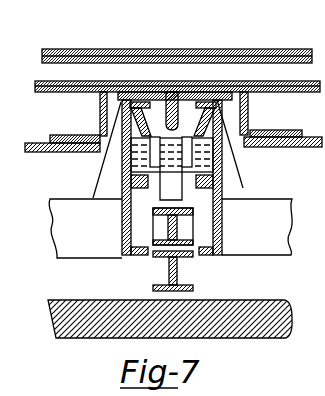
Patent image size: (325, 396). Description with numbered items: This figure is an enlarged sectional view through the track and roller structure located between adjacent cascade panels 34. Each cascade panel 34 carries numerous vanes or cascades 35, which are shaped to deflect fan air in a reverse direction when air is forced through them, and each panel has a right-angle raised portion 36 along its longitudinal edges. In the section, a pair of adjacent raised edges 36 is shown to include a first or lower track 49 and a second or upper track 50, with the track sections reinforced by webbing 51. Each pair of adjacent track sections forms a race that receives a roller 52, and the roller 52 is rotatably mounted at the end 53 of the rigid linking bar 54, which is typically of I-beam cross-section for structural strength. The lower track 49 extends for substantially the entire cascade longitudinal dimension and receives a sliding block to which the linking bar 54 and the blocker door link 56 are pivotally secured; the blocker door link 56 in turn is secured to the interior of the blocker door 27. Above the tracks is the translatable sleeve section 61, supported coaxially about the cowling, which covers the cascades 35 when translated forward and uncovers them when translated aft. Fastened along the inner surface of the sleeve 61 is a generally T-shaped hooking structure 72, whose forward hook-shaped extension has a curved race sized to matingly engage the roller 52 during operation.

The blocker door 27 is at (72, 318).
The cascade panel 34 is at (72, 198).
The vanes or cascades 35 is at (82, 239).
The right-angle raised portion 36 is at (121, 230).
The lower track 49 is at (139, 250).
The upper track 50 is at (138, 133).
The webbing 51 is at (113, 170).
The roller 52 is at (218, 110).
The end of the rigid linking bar 53 is at (203, 118).
The rigid linking bar 54 is at (221, 189).
The blocker door link 56 is at (180, 272).
The translatable sleeve section 61 is at (72, 72).
The T-shaped hooking structure 72 is at (186, 125).